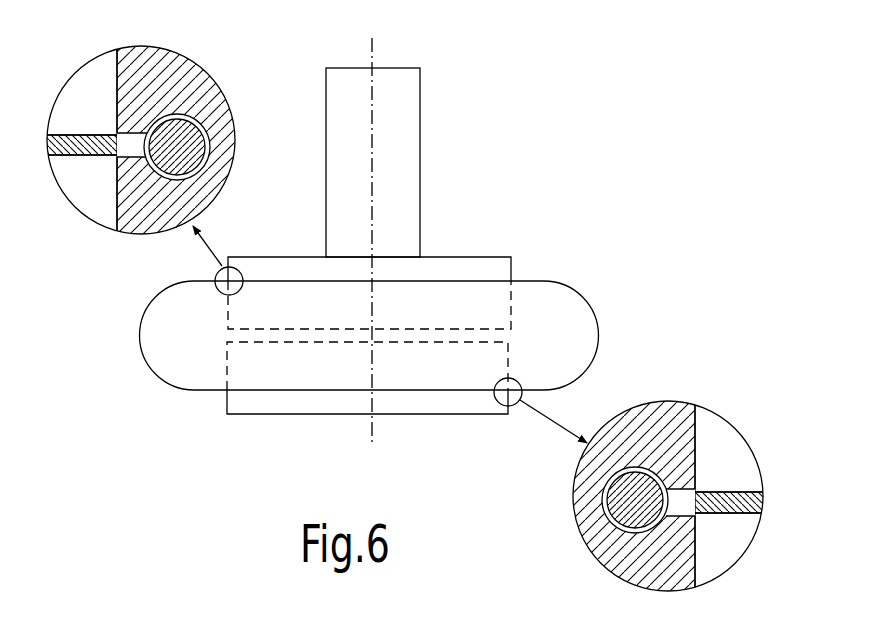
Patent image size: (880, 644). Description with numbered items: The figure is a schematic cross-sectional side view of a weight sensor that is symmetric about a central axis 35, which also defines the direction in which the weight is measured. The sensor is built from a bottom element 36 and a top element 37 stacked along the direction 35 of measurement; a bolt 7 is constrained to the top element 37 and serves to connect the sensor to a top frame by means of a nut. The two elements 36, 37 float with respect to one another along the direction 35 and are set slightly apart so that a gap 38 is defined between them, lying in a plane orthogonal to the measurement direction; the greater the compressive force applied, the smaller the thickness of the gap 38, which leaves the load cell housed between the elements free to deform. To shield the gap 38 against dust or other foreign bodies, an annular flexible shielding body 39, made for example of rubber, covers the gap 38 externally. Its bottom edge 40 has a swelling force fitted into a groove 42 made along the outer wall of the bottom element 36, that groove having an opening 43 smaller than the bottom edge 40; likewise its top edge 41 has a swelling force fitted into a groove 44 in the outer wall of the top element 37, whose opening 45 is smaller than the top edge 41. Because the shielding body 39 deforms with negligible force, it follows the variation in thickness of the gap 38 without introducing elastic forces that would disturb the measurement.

The bolt 7 is at (412, 134).
The central axis 35 is at (373, 48).
The bottom element 36 is at (462, 413).
The top element 37 is at (475, 265).
The gap 38 is at (215, 345).
The flexible shielding body 39 is at (88, 152).
The bottom edge 40 is at (182, 135).
The top edge 41 is at (615, 502).
The groove 42 is at (187, 172).
The opening 43 is at (110, 127).
The groove 44 is at (643, 532).
The opening 45 is at (700, 485).